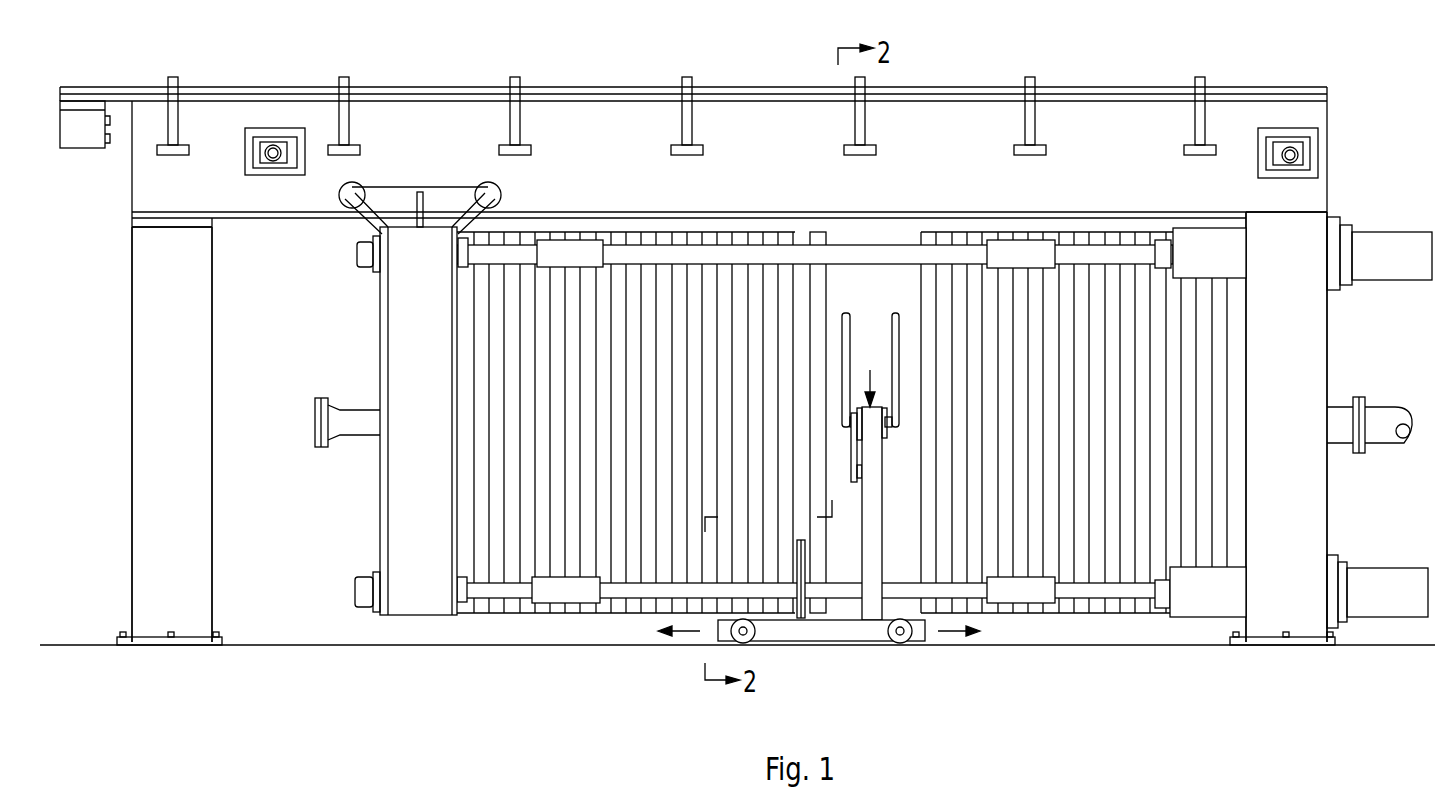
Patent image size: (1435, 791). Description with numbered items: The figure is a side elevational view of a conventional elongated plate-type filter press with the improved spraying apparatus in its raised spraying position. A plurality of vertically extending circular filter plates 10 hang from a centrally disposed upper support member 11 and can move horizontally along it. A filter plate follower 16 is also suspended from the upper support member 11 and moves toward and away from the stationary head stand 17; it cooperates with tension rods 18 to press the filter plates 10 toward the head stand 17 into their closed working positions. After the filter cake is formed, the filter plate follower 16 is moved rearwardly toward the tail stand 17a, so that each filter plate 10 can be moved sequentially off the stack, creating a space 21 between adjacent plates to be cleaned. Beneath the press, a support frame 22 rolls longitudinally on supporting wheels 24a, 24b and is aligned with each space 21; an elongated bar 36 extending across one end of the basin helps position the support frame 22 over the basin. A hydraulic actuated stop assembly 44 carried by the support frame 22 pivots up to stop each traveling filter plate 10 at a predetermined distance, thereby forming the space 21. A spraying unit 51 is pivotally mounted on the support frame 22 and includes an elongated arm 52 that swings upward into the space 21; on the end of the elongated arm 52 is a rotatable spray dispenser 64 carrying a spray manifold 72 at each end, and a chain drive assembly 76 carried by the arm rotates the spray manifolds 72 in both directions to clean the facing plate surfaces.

The filter plates 10 is at (650, 240).
The upper support member 11 is at (592, 88).
The filter plate follower 16 is at (396, 325).
The head stand 17 is at (1317, 510).
The tail stand 17a is at (203, 508).
The tension rods 18 is at (767, 257).
The space 21 is at (899, 282).
The support frame 22 is at (848, 630).
The supporting wheel 24a is at (745, 642).
The supporting wheel 24b is at (901, 643).
The elongated bar 36 is at (235, 640).
The stop assembly 44 is at (797, 550).
The spraying unit 51 is at (870, 372).
The elongated arm 52 is at (878, 510).
The spray dispenser 64 is at (885, 432).
The spray manifold 72 is at (893, 335).
The chain drive assembly 76 is at (840, 476).